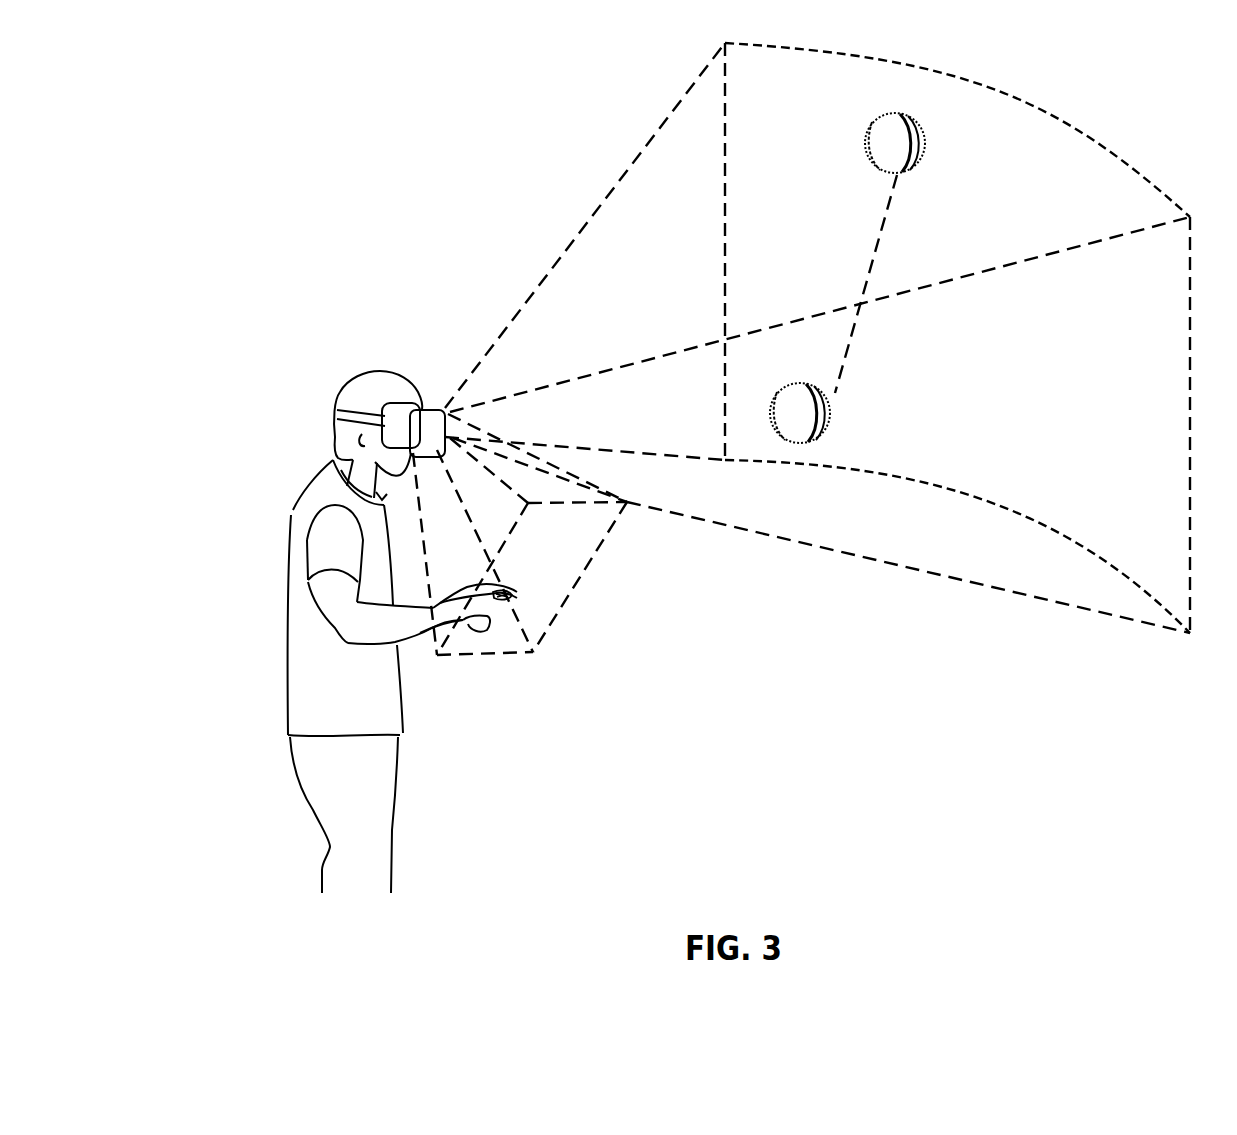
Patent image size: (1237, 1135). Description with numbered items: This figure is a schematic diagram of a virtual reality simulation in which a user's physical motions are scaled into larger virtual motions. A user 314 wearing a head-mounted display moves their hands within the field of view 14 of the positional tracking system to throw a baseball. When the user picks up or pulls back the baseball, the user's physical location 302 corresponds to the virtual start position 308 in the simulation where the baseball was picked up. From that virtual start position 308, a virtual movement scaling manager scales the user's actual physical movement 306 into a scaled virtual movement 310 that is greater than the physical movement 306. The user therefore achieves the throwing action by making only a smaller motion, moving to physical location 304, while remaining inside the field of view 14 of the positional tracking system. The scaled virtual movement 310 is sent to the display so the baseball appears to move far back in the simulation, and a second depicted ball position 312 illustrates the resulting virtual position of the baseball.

The field of view 14 is at (490, 660).
The physical location 302 is at (557, 533).
The physical location 304 is at (517, 593).
The physical movement 306 is at (538, 560).
The virtual start position 308 is at (928, 140).
The scaled virtual movement 310 is at (868, 275).
The virtual ball at second position 312 is at (800, 443).
The user 314 is at (290, 583).